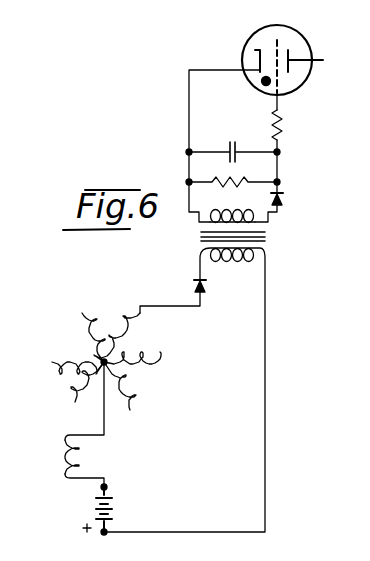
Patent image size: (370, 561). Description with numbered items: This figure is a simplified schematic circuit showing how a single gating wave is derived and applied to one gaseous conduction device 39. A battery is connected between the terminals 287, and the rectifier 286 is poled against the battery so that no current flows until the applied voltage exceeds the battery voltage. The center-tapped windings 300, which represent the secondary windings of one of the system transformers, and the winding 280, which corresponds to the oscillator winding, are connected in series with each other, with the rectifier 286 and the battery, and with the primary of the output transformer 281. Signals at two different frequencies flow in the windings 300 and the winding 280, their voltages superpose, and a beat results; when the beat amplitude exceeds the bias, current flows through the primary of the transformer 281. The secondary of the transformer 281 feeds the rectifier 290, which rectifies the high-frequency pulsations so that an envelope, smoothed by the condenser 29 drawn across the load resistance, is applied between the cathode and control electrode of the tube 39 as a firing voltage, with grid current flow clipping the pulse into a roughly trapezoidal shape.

The gaseous conduction device 39 is at (308, 77).
The capacitor 29 is at (233, 141).
The rectifier 290 is at (280, 200).
The output transformer 281 is at (267, 238).
The rectifier 286 is at (207, 288).
The windings 300 is at (143, 323).
The winding 280 is at (62, 455).
The terminals 287 is at (104, 487).